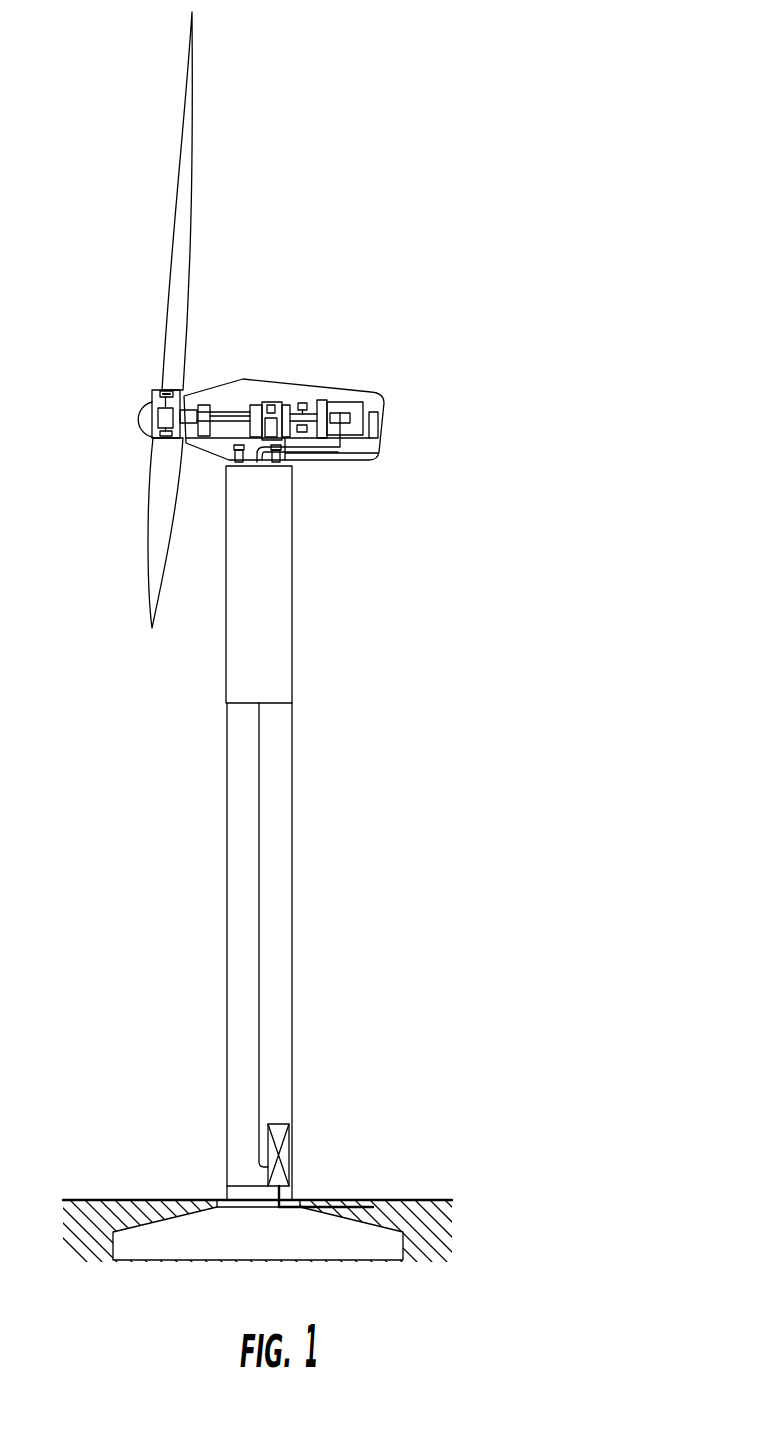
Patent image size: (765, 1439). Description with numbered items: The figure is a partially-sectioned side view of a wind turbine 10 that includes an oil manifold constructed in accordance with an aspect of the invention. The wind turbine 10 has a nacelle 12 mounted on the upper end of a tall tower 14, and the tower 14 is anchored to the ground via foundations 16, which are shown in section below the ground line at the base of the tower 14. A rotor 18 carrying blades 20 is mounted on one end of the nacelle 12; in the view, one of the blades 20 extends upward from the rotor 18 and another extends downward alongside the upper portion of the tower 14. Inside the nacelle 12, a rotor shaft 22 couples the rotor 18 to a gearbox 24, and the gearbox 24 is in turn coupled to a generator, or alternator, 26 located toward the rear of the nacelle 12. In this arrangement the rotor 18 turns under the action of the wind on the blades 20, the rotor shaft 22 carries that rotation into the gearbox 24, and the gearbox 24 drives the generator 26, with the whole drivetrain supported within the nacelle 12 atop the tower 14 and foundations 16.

The wind turbine 10 is at (420, 350).
The nacelle 12 is at (404, 419).
The tower 14 is at (272, 541).
The foundations 16 is at (203, 1232).
The rotor 18 is at (104, 410).
The blades 20 is at (157, 489).
The rotor shaft 22 is at (222, 415).
The gearbox 24 is at (270, 408).
The generator 26 is at (345, 407).